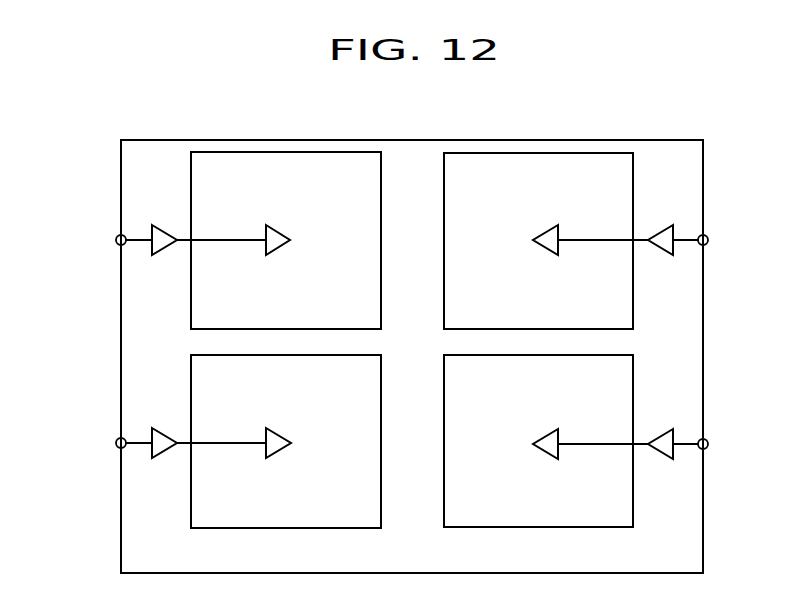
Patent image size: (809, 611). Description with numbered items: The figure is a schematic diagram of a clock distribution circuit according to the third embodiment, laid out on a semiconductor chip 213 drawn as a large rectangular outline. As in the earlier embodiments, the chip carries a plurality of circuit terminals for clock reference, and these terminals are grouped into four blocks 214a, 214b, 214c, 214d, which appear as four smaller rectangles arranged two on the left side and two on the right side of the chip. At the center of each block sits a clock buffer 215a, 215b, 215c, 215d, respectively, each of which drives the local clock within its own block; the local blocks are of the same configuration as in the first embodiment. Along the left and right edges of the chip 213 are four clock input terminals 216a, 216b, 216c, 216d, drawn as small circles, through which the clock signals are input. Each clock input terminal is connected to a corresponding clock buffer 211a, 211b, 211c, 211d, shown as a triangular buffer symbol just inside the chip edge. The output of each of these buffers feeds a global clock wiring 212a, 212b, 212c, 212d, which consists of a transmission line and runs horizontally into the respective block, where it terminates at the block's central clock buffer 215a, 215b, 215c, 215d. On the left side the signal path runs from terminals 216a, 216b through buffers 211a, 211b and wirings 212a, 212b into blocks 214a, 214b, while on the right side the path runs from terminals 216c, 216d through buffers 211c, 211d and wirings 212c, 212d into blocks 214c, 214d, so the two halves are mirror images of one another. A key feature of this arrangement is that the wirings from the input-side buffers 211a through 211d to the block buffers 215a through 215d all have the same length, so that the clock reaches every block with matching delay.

The semiconductor chip 213 is at (147, 531).
The block 214a is at (207, 152).
The block 214b is at (207, 528).
The block 214c is at (616, 298).
The block 214d is at (616, 510).
The clock buffer 211a is at (152, 245).
The clock buffer 211b is at (152, 448).
The clock buffer 211c is at (676, 233).
The clock buffer 211d is at (676, 437).
The global clock wiring 212a is at (223, 238).
The global clock wiring 212b is at (223, 441).
The global clock wiring 212c is at (643, 239).
The global clock wiring 212d is at (642, 443).
The clock buffer 215a is at (278, 238).
The clock buffer 215b is at (278, 441).
The clock buffer 215c is at (573, 218).
The clock buffer 215d is at (573, 420).
The clock input terminal 216a is at (117, 236).
The clock input terminal 216b is at (117, 439).
The clock input terminal 216c is at (707, 245).
The clock input terminal 216d is at (707, 449).